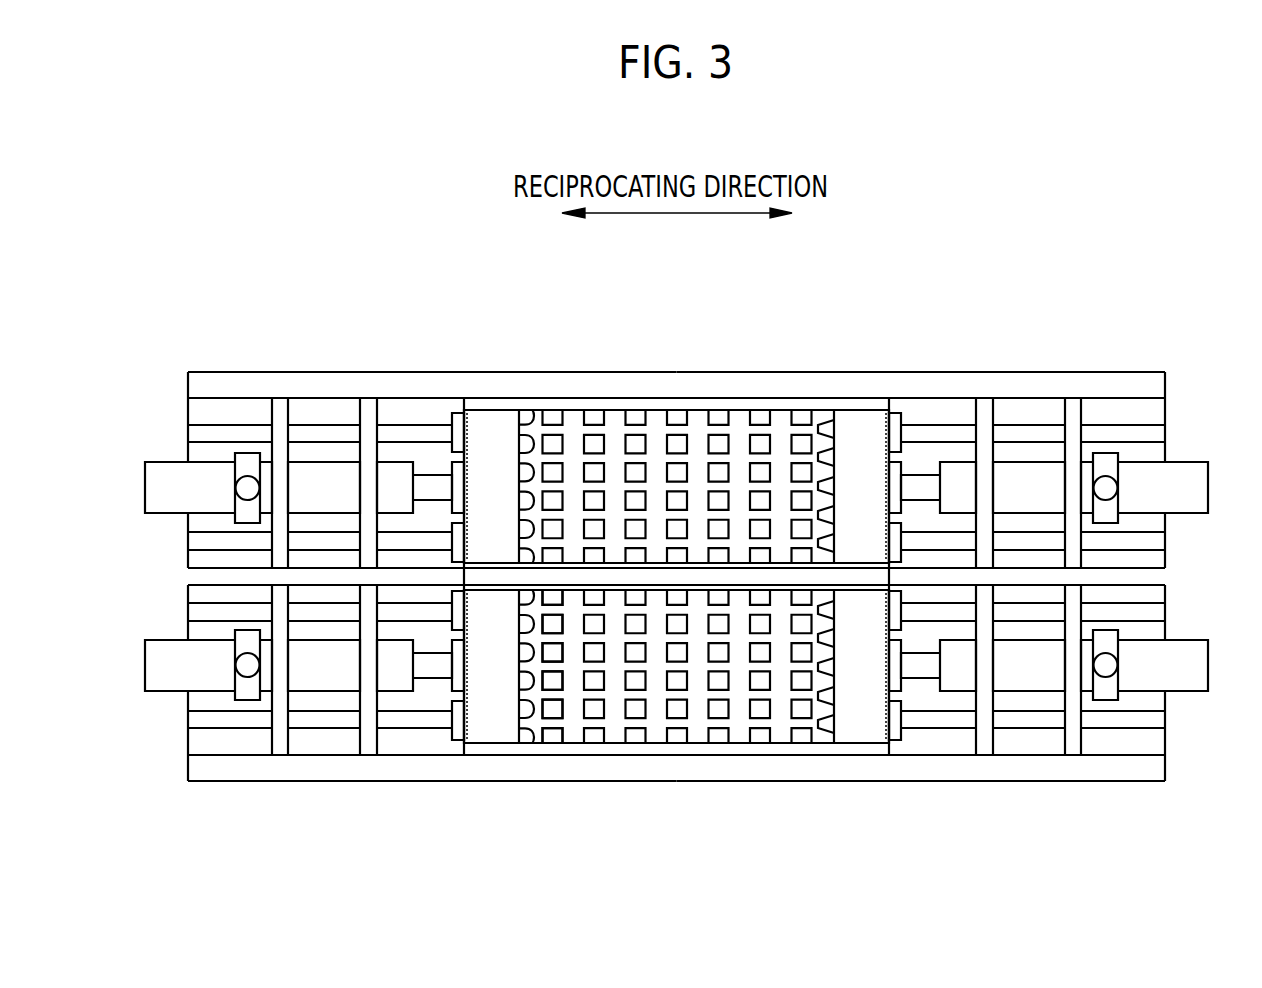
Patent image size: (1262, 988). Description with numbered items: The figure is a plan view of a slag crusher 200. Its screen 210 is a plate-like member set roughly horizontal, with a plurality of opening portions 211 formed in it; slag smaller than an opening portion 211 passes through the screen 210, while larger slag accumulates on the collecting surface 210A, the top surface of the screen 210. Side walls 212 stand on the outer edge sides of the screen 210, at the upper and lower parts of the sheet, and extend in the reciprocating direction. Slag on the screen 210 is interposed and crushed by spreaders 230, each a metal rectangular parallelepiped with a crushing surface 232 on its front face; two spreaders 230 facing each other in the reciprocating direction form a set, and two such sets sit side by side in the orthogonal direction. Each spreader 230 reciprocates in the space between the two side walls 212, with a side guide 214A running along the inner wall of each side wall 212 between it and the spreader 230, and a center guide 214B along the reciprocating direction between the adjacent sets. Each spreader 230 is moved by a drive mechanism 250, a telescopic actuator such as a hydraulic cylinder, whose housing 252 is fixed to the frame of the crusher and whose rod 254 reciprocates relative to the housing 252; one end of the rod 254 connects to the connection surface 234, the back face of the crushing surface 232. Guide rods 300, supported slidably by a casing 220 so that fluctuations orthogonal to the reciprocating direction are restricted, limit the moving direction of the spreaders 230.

The slag crusher 200 is at (1112, 237).
The screen 210 is at (614, 757).
The collecting surface 210A is at (693, 723).
The opening portion 211 is at (556, 705).
The side wall 212 is at (973, 372).
The side guide 214A is at (740, 393).
The center guide 214B is at (657, 560).
The casing 220 is at (285, 755).
The spreader 230 is at (491, 410).
The crushing surface 232 is at (520, 458).
The connection surface 234 is at (463, 458).
The drive mechanism 250 is at (148, 527).
The housing 252 is at (330, 693).
The rod 254 is at (435, 680).
The guide rod 300 is at (222, 530).